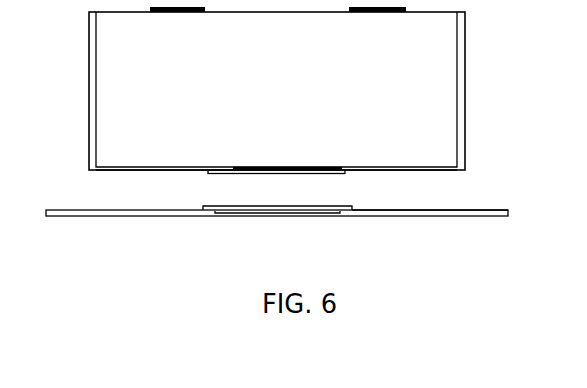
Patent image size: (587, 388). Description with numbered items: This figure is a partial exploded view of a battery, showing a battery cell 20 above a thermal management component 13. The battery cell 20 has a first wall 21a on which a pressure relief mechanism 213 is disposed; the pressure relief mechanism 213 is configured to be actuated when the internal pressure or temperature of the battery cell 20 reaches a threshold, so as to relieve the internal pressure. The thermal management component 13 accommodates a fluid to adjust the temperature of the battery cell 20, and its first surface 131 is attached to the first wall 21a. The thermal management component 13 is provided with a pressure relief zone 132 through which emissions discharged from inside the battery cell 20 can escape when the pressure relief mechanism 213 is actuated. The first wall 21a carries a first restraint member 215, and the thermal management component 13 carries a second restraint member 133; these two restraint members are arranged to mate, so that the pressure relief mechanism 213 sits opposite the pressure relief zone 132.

The battery cell 20 is at (277, 88).
The first wall 21a is at (440, 169).
The pressure relief mechanism 213 is at (247, 168).
The first restraint member 215 is at (345, 172).
The thermal management component 13 is at (437, 216).
The first surface 131 is at (495, 210).
The pressure relief zone 132 is at (235, 212).
The second restraint member 133 is at (350, 207).